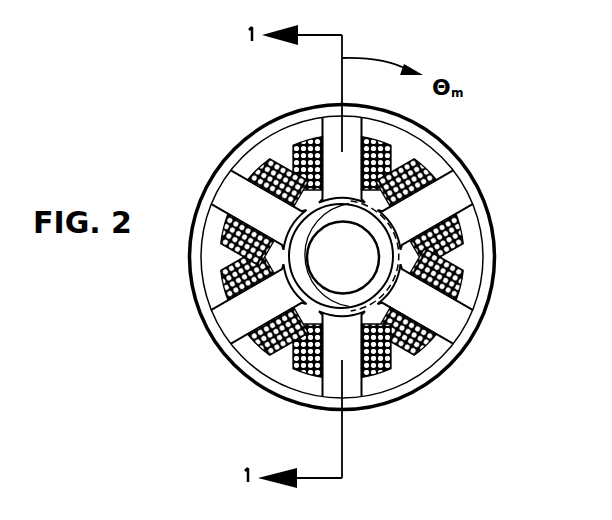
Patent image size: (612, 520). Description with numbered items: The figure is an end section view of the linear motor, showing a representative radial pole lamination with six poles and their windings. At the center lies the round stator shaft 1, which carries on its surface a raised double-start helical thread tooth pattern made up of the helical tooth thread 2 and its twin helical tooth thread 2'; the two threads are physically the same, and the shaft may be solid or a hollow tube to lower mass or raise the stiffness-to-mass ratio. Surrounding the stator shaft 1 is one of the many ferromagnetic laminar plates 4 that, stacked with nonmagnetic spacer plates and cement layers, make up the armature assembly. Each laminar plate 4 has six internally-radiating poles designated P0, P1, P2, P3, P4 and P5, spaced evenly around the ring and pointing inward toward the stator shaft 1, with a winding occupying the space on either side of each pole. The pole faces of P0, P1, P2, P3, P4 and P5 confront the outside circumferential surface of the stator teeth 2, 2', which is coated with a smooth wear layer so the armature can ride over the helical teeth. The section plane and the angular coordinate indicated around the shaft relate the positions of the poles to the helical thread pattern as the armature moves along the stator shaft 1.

The stator shaft 1 is at (336, 257).
The helical tooth thread 2 is at (309, 205).
The twin helical tooth thread 2' is at (449, 256).
The laminar plate 4 is at (478, 210).
The pole P0 is at (342, 160).
The pole P1 is at (426, 209).
The pole P2 is at (426, 306).
The pole P3 is at (342, 354).
The pole P4 is at (257, 306).
The pole P5 is at (257, 209).